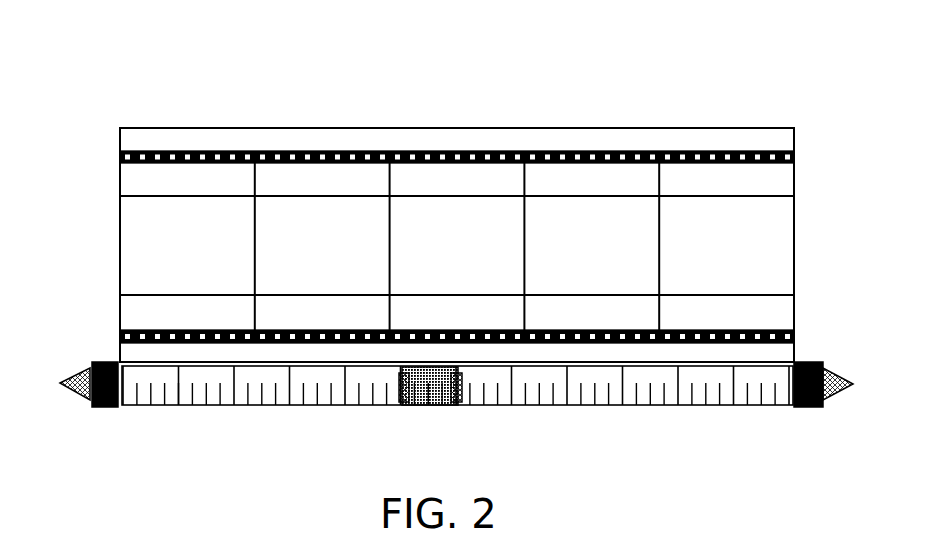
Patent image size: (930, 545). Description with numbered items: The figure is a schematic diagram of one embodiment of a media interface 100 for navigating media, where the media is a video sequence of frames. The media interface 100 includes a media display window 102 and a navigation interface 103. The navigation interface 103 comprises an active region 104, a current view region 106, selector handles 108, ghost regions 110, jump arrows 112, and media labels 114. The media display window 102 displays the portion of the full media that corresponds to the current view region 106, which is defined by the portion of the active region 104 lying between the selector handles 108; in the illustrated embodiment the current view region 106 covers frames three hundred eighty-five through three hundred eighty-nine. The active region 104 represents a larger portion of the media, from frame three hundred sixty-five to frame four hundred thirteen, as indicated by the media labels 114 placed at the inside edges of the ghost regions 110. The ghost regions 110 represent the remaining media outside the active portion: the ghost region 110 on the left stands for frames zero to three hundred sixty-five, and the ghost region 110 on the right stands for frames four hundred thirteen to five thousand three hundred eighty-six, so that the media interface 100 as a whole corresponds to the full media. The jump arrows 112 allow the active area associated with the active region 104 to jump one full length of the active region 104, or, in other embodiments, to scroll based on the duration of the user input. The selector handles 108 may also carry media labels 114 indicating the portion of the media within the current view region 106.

The media interface 100 is at (199, 68).
The media display window 102 is at (412, 127).
The navigation interface 103 is at (38, 386).
The active region 104 is at (285, 407).
The current view region 106 is at (405, 405).
The selector handles 108 is at (430, 404).
The ghost regions 110 is at (107, 362).
The jump arrows 112 is at (70, 393).
The media labels 114 is at (93, 478).